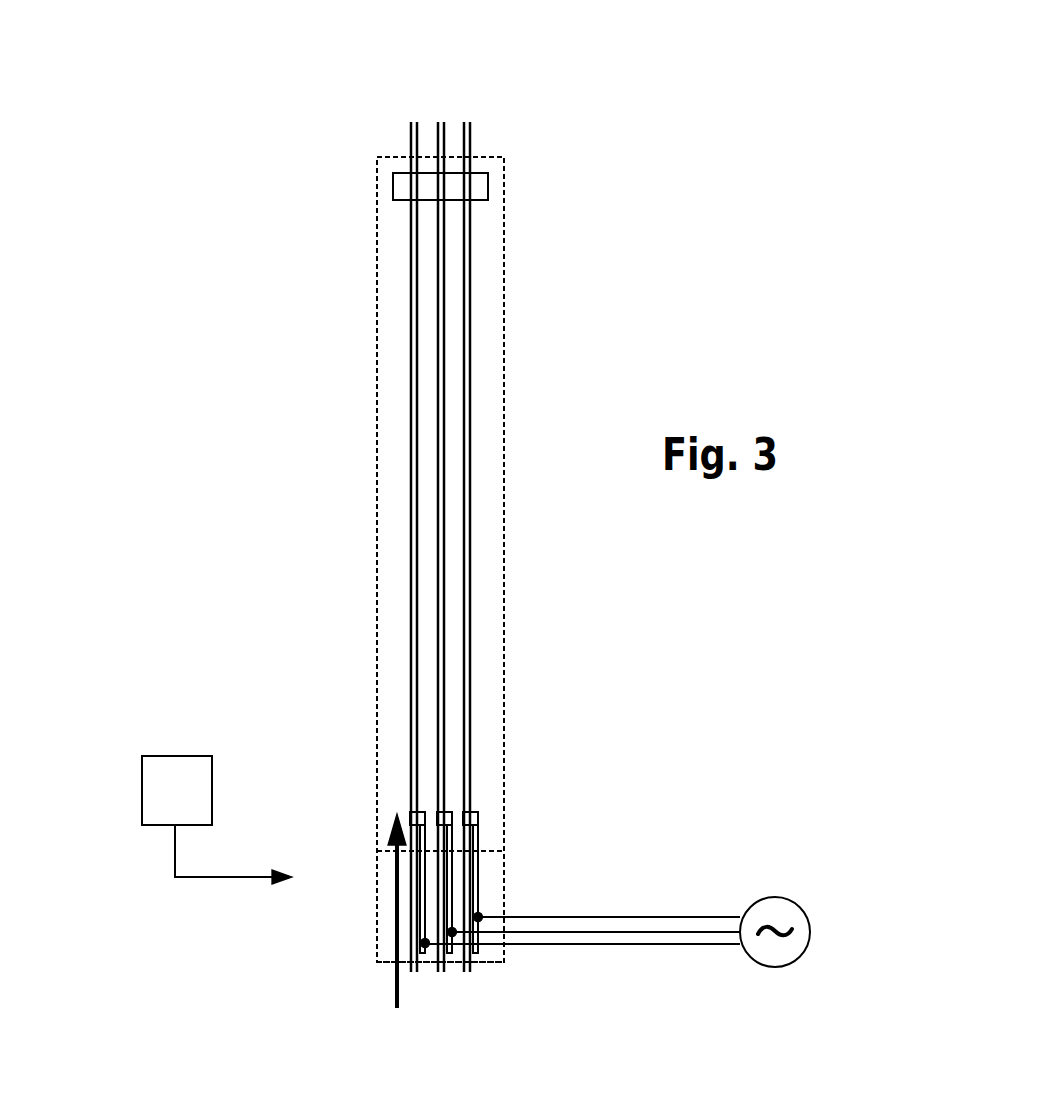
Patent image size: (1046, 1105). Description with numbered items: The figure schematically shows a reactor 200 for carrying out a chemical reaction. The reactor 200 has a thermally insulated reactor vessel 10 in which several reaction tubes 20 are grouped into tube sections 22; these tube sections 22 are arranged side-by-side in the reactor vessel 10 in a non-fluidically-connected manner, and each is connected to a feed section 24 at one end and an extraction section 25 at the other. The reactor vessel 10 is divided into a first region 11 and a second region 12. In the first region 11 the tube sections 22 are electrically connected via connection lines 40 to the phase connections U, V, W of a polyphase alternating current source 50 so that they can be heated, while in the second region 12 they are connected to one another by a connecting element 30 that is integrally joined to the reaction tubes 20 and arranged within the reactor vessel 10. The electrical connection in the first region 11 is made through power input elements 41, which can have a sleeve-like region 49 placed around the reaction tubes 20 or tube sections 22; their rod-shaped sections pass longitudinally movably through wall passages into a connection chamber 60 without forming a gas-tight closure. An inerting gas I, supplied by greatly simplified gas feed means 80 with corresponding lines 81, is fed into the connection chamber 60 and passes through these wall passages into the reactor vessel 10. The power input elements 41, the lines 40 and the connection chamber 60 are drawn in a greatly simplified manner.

The reactor 200 is at (335, 85).
The reactor vessel 10 is at (377, 605).
The first region 11 is at (520, 755).
The second region 12 is at (515, 218).
The reaction tube 20 is at (422, 524).
The tube section 22 is at (437, 343).
The extraction section 25 is at (472, 128).
The connecting element 30 is at (488, 188).
The sleeve-like region 49 is at (411, 813).
The feed section 24 is at (412, 887).
The power input element 41 is at (417, 932).
The connection chamber 60 is at (504, 962).
The three-phase lines 40 is at (582, 908).
The polyphase alternating current source 50 is at (763, 896).
The gas feed means 80 is at (177, 790).
The line 81 is at (175, 857).
The phase connection U is at (620, 945).
The phase connection V is at (662, 932).
The phase connection W is at (698, 917).
The inerting gas I is at (397, 973).